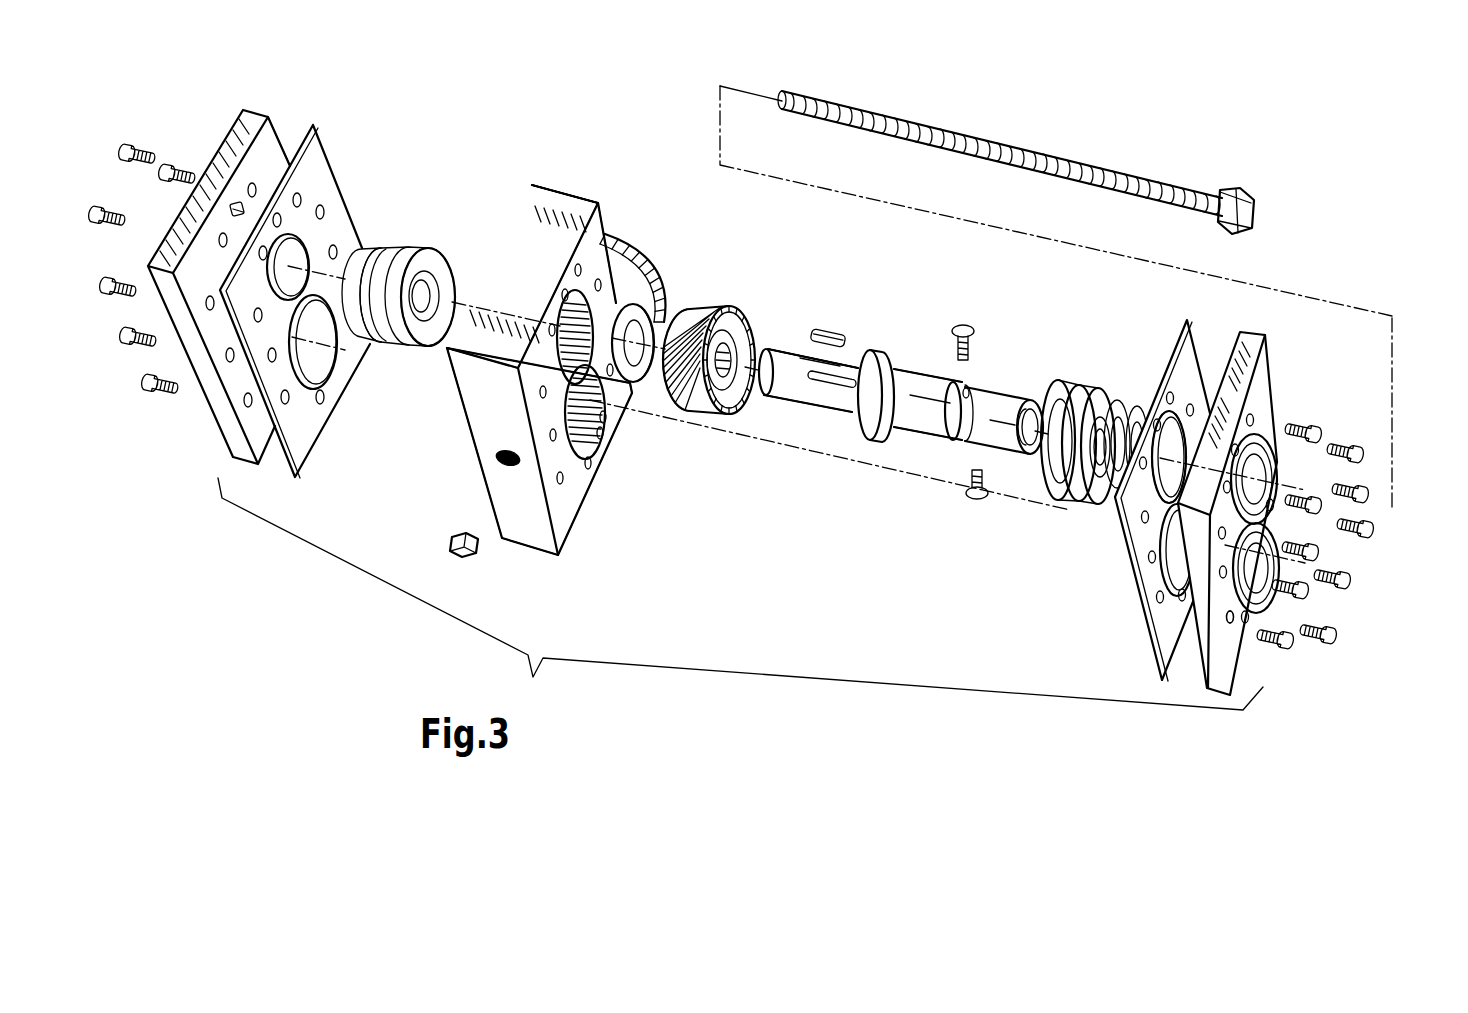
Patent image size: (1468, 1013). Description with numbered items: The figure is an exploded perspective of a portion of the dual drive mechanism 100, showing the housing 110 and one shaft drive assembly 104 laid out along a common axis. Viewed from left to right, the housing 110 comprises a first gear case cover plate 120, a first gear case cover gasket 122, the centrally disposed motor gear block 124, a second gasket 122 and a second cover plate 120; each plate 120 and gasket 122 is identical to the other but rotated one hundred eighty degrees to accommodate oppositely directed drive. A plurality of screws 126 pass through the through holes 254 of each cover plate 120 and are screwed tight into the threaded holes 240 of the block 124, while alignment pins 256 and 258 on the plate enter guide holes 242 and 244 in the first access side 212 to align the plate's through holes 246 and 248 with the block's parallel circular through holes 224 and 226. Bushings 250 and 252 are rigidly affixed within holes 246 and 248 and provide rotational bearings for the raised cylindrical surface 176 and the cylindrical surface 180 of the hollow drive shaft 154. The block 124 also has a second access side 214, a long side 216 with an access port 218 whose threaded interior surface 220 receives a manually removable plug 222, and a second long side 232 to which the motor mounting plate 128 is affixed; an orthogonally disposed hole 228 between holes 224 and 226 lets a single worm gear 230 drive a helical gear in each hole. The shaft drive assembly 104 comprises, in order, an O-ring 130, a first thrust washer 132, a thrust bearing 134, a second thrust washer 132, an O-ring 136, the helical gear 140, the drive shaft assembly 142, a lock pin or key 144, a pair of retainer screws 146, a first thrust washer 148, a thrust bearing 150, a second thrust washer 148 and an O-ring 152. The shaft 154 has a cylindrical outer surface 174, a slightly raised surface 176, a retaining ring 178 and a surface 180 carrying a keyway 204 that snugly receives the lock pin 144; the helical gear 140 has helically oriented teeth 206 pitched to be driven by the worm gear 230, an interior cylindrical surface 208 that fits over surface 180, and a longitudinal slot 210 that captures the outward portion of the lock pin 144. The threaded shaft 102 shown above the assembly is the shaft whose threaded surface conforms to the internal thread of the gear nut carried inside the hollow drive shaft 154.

The dual drive mechanism 100 is at (598, 122).
The threaded shaft 102 is at (950, 120).
The shaft drive assembly 104 is at (893, 257).
The housing 110 is at (625, 572).
The gear case cover plate 120 is at (257, 106).
The gear case cover gasket 122 is at (313, 123).
The motor gear block 124 is at (582, 197).
The screws 126 is at (92, 215).
The motor mounting plate 128 is at (640, 305).
The O-ring 130 is at (365, 243).
The thrust washer 132 is at (392, 244).
The thrust bearing 134 is at (430, 245).
The O-ring 136 is at (706, 305).
The helical gear 140 is at (730, 343).
The drive shaft assembly 142 is at (918, 363).
The lock pin 144 is at (833, 330).
The retainer screws 146 is at (965, 325).
The thrust washer 148 is at (1072, 378).
The thrust bearing 150 is at (1093, 384).
The O-ring 152 is at (1130, 400).
The hollow drive shaft 154 is at (833, 397).
The cylindrical outer surface 174 is at (965, 445).
The raised cylindrical surface 176 is at (921, 430).
The retaining ring 178 is at (863, 418).
The cylindrical surface 180 is at (808, 385).
The keyway 204 is at (872, 352).
The helically oriented teeth 206 is at (748, 325).
The interior cylindrical surface 208 is at (722, 418).
The longitudinal slot 210 is at (695, 420).
The first access side 212 is at (612, 238).
The second access side 214 is at (532, 183).
The long side 216 is at (494, 459).
The access port 218 is at (505, 470).
The interior surface 220 is at (560, 552).
The plug 222 is at (455, 541).
The through hole 224 is at (628, 262).
The through hole 226 is at (608, 405).
The orthogonal hole 228 is at (560, 320).
The worm gear 230 is at (490, 410).
The second long side 232 is at (576, 196).
The threaded holes 240 is at (630, 520).
The guide hole 242 is at (564, 290).
The guide hole 244 is at (592, 462).
The through hole 246 is at (1170, 502).
The through hole 248 is at (287, 160).
The bushing 250 is at (1290, 456).
The bushing 252 is at (1285, 562).
The through holes 254 is at (252, 184).
The alignment pin 256 is at (1213, 332).
The alignment pin 258 is at (237, 206).